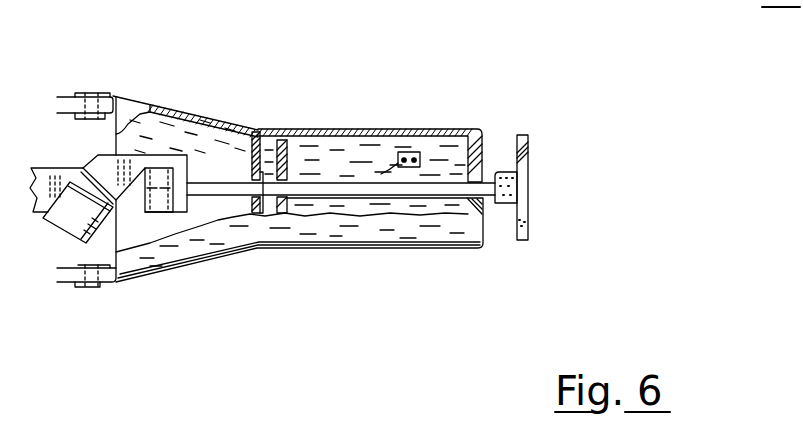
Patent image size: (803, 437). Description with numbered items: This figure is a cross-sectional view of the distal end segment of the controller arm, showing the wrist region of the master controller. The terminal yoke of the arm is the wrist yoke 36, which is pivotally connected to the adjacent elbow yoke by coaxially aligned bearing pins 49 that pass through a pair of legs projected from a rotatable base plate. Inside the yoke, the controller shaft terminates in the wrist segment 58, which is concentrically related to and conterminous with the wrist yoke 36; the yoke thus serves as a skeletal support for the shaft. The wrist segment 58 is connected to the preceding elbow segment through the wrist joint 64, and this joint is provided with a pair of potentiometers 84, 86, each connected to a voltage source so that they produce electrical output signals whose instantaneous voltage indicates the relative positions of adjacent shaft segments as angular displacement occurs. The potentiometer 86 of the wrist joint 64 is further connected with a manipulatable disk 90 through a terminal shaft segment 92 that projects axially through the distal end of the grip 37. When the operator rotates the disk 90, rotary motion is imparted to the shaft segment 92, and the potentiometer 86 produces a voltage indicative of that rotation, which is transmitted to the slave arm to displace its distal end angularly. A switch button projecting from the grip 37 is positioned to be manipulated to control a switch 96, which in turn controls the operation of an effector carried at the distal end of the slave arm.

The wrist yoke 36 is at (270, 296).
The grip 37 is at (385, 249).
The bearing pins 49 is at (92, 284).
The wrist segment 58 is at (222, 188).
The wrist joint 64 is at (52, 168).
The potentiometer 84 is at (66, 221).
The potentiometer 86 is at (161, 214).
The manipulatable disk 90 is at (526, 194).
The terminal shaft segment 92 is at (337, 181).
The switch 96 is at (405, 157).